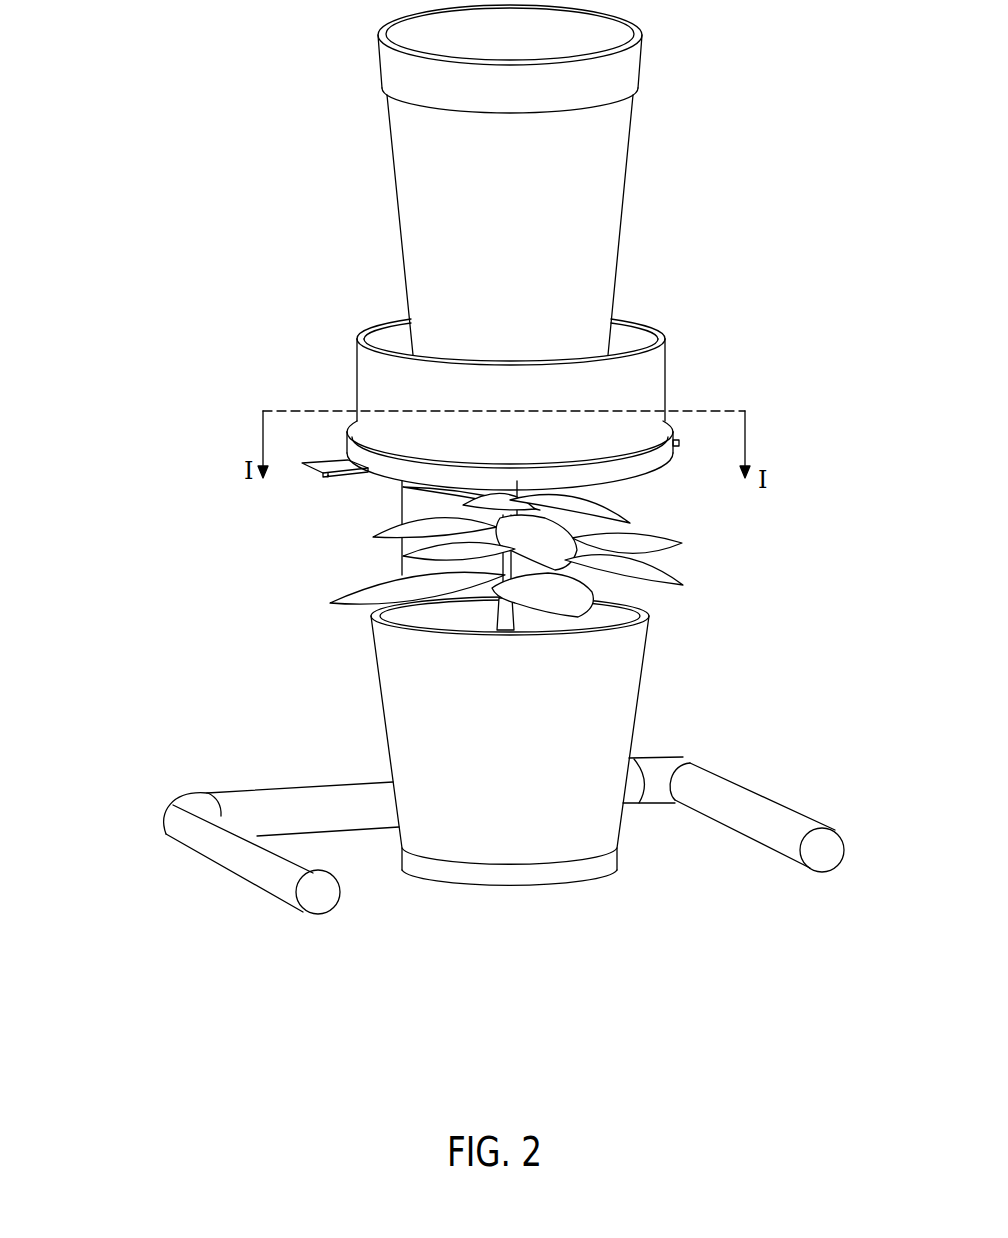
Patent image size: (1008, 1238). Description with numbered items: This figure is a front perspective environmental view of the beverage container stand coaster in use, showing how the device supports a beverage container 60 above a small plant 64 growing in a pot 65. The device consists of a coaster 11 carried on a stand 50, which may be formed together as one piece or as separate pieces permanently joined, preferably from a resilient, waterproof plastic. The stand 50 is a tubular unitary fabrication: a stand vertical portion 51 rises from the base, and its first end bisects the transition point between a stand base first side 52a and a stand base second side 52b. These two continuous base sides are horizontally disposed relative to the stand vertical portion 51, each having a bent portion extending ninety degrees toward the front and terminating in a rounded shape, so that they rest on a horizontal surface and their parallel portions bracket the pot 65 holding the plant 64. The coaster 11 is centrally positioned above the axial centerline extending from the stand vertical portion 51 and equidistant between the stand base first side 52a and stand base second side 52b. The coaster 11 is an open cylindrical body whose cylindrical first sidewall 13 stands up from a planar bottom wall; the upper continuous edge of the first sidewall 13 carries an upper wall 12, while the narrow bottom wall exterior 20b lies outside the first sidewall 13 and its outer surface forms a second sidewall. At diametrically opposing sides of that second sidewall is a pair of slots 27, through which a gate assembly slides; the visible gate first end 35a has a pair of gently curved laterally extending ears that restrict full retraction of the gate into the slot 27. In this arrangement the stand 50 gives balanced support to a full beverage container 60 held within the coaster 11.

The coaster 11 is at (403, 351).
The upper wall 12 is at (450, 348).
The first sidewall 13 is at (358, 393).
The bottom wall exterior 20b is at (350, 440).
The slot 27 is at (248, 463).
The gate first end 35a is at (315, 473).
The stand 50 is at (461, 755).
The stand vertical portion 51 is at (403, 502).
The stand base first side 52a is at (212, 791).
The stand base second side 52b is at (723, 773).
The beverage container 60 is at (441, 162).
The plant 64 is at (403, 588).
The pot 65 is at (450, 772).